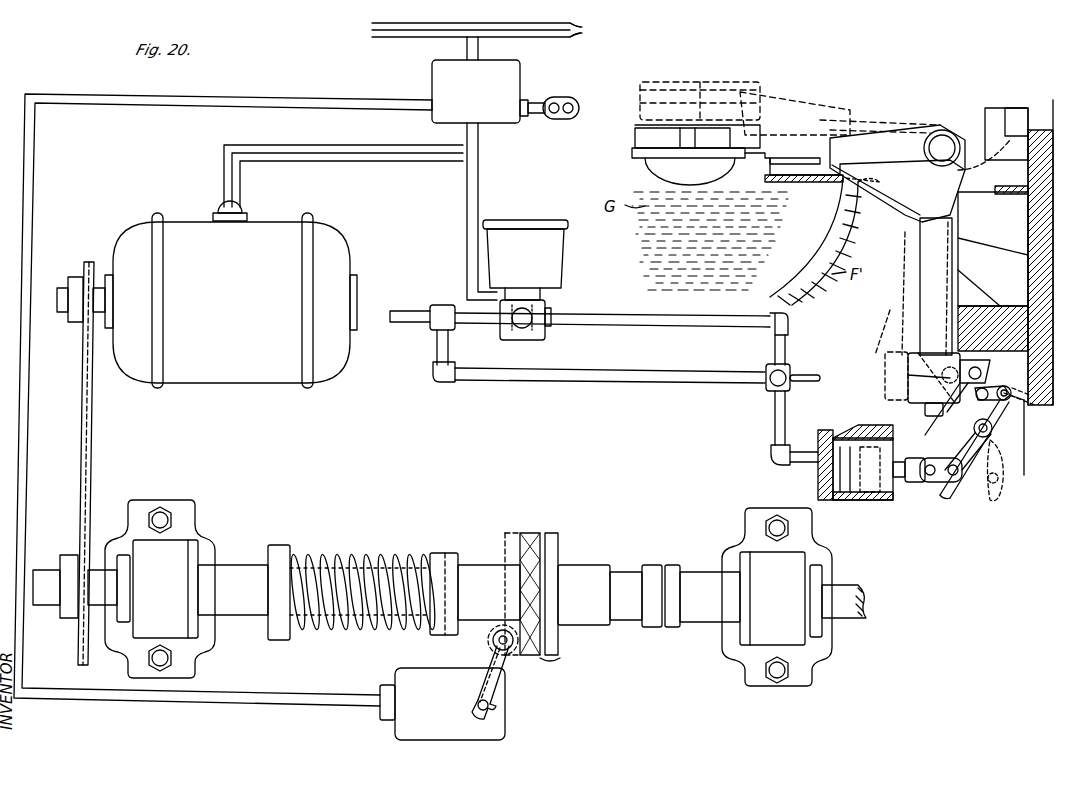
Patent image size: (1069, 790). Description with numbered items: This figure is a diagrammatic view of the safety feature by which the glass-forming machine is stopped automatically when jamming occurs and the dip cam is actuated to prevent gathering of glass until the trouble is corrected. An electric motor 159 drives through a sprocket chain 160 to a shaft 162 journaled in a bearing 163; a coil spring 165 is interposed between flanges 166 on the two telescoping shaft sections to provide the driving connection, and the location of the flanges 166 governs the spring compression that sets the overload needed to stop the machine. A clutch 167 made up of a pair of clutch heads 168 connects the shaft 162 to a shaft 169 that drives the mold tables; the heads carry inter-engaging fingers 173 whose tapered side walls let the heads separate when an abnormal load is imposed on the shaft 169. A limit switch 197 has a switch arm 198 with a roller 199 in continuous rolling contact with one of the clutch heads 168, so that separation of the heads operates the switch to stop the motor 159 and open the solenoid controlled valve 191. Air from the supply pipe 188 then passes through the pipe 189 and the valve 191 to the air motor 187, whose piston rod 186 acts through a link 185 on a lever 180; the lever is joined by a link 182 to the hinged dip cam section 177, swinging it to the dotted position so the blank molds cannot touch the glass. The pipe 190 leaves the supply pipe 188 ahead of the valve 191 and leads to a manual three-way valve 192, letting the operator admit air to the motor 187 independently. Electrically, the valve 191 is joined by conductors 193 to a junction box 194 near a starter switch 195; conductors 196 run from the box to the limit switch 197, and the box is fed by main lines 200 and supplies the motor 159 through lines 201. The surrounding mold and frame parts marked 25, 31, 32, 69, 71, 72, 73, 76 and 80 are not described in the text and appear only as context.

The plate 25 is at (711, 155).
The frame block 31 is at (1030, 222).
The strip 32 is at (1006, 200).
The pivot pin 69 is at (938, 156).
The arm 71 is at (893, 170).
The column 72 is at (930, 300).
The bracket 73 is at (905, 358).
The plate member 76 is at (645, 118).
The bar 80 is at (778, 136).
The electric motor 159 is at (262, 380).
The sprocket chain 160 is at (92, 441).
The shaft 162 is at (234, 577).
The bearing 163 is at (205, 652).
The coil spring 165 is at (370, 552).
The flanges 166 is at (275, 552).
The clutch 167 is at (553, 660).
The clutch heads 168 is at (528, 536).
The shaft 169 is at (697, 613).
The inter-engaging fingers 173 is at (550, 536).
The dip cam section 177 is at (905, 380).
The lever 180 is at (975, 475).
The link 182 is at (1015, 418).
The link 185 is at (950, 482).
The piston rod 186 is at (878, 475).
The air motor 187 is at (834, 497).
The air pressure supply pipe 188 is at (408, 320).
The pipe 189 is at (651, 319).
The pipe 190 is at (661, 380).
The solenoid controlled valve 191 is at (548, 306).
The three-way valve 192 is at (785, 370).
The conductors 193 is at (470, 208).
The junction box 194 is at (511, 76).
The starter switch 195 is at (575, 95).
The conductors 196 is at (352, 108).
The limit switch 197 is at (408, 731).
The switch arm 198 is at (497, 668).
The roller 199 is at (502, 628).
The main lines 200 is at (493, 33).
The lines 201 is at (376, 148).